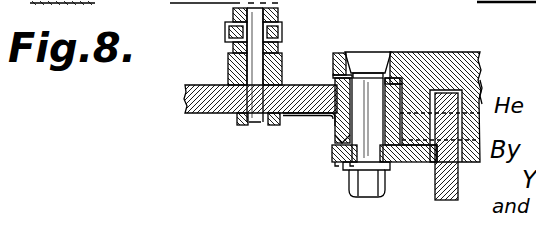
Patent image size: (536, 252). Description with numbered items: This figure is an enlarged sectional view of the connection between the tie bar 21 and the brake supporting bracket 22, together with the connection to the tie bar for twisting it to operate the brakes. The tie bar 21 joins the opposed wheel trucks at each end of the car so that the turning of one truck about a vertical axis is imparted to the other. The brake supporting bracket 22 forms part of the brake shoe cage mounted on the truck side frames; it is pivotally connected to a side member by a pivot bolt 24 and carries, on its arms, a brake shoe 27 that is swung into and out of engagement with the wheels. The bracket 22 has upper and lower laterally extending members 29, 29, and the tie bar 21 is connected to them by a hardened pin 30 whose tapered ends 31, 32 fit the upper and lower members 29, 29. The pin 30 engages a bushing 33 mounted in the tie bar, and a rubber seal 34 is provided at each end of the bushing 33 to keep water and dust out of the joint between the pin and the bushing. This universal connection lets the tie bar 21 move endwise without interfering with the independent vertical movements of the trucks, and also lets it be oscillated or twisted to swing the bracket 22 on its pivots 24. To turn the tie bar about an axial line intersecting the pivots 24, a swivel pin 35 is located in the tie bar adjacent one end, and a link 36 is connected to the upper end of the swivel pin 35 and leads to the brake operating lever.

The tie bar 21 is at (212, 112).
The brake supporting bracket 22 is at (468, 54).
The pivot bolt 24 is at (481, 97).
The brake shoe 27 is at (470, 191).
The laterally extending members 29 is at (330, 58).
The pin 30 is at (333, 157).
The tapered end 31 is at (370, 52).
The tapered end 32 is at (383, 189).
The bushing 33 is at (337, 124).
The rubber seal 34 is at (392, 79).
The swivel pin 35 is at (255, 64).
The link 36 is at (237, 9).